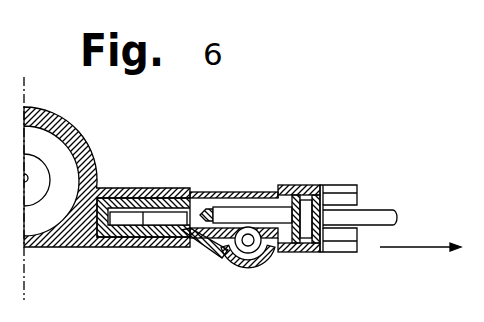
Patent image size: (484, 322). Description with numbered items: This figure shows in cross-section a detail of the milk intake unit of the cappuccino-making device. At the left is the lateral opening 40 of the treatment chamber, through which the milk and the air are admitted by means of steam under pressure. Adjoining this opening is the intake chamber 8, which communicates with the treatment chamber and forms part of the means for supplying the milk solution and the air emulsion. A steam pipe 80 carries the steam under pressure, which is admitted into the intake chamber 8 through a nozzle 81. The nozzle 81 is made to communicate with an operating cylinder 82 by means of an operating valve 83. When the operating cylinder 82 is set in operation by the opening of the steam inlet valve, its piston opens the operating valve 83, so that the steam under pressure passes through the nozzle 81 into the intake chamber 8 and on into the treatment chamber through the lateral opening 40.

The lateral opening 40 is at (84, 246).
The intake chamber 8 is at (132, 213).
The steam pipe 80 is at (172, 221).
The nozzle 81 is at (200, 193).
The operating cylinder 82 is at (315, 252).
The operating valve 83 is at (266, 192).